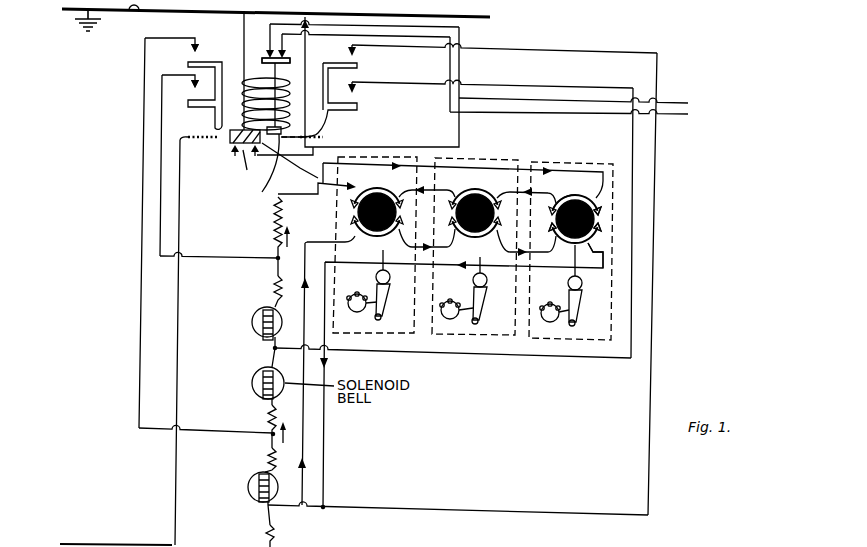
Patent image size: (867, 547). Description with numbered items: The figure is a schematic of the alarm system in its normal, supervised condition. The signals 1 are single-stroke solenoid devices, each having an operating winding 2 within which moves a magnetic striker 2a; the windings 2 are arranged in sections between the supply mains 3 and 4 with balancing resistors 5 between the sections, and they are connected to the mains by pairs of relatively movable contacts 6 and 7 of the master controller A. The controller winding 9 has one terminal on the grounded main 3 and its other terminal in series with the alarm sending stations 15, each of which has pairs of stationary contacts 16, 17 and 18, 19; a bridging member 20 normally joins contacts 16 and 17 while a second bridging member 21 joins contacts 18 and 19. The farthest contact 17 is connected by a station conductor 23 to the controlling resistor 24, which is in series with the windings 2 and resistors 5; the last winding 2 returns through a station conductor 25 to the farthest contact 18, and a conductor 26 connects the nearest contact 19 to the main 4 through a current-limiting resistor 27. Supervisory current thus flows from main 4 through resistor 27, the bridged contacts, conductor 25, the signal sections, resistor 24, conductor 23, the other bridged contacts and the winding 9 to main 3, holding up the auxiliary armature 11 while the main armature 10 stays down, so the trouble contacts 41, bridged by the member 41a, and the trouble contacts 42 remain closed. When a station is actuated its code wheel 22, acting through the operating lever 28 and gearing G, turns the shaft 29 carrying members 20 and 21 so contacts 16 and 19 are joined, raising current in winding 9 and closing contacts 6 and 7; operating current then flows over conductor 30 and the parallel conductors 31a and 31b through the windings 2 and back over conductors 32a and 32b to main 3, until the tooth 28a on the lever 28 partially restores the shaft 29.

The signals 1 is at (254, 312).
The operating winding 2 is at (276, 324).
The magnetic striker 2a is at (265, 342).
The supply main 3 is at (129, 17).
The supply main 4 is at (110, 543).
The balancing resistors 5 is at (272, 455).
The controller contacts 6 is at (221, 82).
The controller contacts 7 is at (190, 50).
The controller winding 9 is at (262, 113).
The main armature 10 is at (241, 168).
The auxiliary armature 11 is at (261, 172).
The alarm sending stations 15 is at (615, 228).
The station contact 16 is at (563, 197).
The station contact 17 is at (600, 208).
The station contact 18 is at (600, 243).
The station contact 19 is at (562, 245).
The bridging member 20 is at (478, 190).
The second bridging member 21 is at (594, 254).
The code wheel 22 is at (549, 322).
The station conductor 23 is at (512, 170).
The controlling resistor 24 is at (275, 239).
The station conductor 25 is at (324, 464).
The conductor 26 is at (306, 429).
The current-limiting resistor 27 is at (277, 534).
The operating lever 28 is at (583, 323).
The tooth 28a is at (564, 338).
The shaft 29 is at (410, 257).
The conductor 30 is at (178, 355).
The conductor 31a is at (160, 220).
The conductor 31b is at (139, 413).
The conductor 32a is at (640, 359).
The conductor 32b is at (448, 510).
The trouble contacts 41 is at (354, 42).
The bridging member 41a is at (262, 60).
The trouble contacts 42 is at (232, 149).
The master controller A is at (235, 71).
The gearing G is at (583, 300).